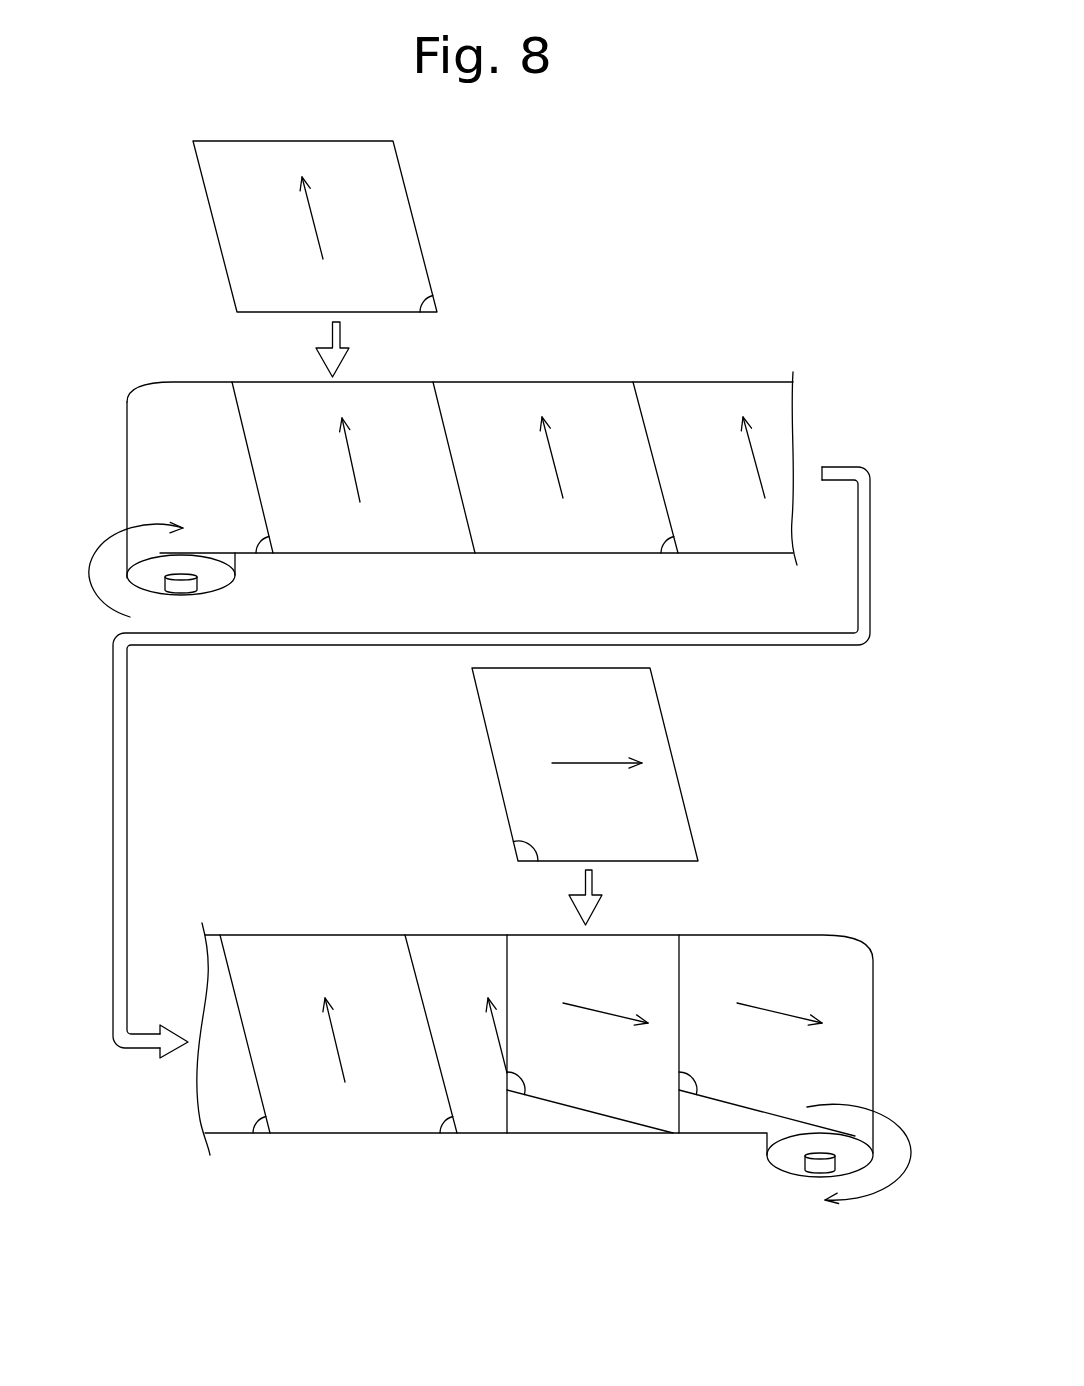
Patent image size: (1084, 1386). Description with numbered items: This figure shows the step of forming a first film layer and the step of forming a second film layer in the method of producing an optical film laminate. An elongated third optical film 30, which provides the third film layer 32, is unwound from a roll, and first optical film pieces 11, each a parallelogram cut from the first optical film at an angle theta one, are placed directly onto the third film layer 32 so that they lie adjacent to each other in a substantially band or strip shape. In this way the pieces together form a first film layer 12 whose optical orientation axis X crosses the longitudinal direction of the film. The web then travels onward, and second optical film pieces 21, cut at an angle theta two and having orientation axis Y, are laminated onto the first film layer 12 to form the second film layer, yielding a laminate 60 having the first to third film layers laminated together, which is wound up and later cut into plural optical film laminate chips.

The first optical film pieces 11 is at (393, 196).
The first film layer 12 is at (688, 326).
The second optical film pieces 21 is at (660, 788).
The third optical film 30 is at (163, 485).
The third film layer 32 is at (425, 469).
The laminate 60 is at (832, 913).